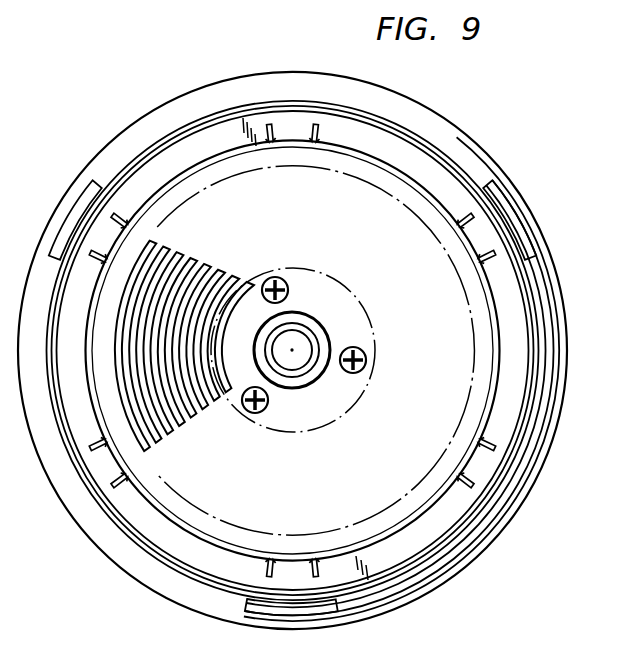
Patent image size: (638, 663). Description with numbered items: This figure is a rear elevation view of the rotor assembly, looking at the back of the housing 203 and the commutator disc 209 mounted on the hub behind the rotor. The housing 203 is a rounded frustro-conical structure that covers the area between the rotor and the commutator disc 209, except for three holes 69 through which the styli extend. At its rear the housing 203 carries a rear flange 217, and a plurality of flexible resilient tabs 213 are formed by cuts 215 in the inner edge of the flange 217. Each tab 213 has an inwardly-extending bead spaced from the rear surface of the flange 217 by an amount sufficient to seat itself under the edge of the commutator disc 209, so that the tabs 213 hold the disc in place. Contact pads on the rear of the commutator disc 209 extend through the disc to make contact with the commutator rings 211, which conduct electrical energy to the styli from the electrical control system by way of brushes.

The housing 203 is at (363, 100).
The rear flange 217 is at (420, 157).
The cuts 215 is at (478, 468).
The holes 69 is at (67, 212).
The flexible resilient tabs 213 is at (290, 128).
The commutator rings 211 is at (257, 270).
The commutator disc 209 is at (252, 349).